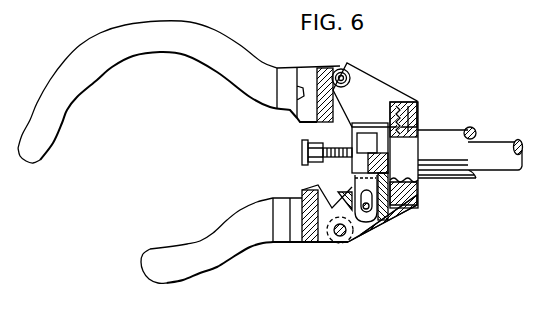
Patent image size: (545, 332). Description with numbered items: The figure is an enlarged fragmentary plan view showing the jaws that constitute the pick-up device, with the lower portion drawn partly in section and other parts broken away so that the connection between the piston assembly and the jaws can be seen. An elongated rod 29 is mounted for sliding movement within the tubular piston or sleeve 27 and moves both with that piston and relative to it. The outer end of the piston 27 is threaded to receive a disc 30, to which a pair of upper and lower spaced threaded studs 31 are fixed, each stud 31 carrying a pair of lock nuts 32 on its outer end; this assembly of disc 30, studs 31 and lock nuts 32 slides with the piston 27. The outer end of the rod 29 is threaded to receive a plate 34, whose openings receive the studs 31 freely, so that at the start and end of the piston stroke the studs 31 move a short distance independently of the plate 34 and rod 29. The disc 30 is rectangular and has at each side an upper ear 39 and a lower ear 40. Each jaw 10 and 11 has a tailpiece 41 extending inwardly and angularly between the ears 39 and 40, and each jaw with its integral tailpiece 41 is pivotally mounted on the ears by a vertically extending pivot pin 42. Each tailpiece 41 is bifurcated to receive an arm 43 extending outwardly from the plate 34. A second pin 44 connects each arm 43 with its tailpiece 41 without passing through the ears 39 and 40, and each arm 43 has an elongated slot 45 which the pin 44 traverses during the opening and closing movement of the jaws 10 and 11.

The jaw 10 is at (220, 263).
The jaw 11 is at (98, 40).
The piston or sleeve 27 is at (467, 128).
The elongated rod 29 is at (521, 168).
The disc 30 is at (410, 140).
The threaded stud 31 is at (340, 148).
The lock nut 32 is at (310, 144).
The plate 34 is at (394, 108).
The upper ear 39 is at (372, 90).
The lower ear 40 is at (381, 222).
The tailpiece 41 is at (363, 235).
The pivot pin 42 is at (343, 70).
The arm 43 is at (352, 181).
The second pin 44 is at (376, 200).
The elongated slot 45 is at (415, 196).